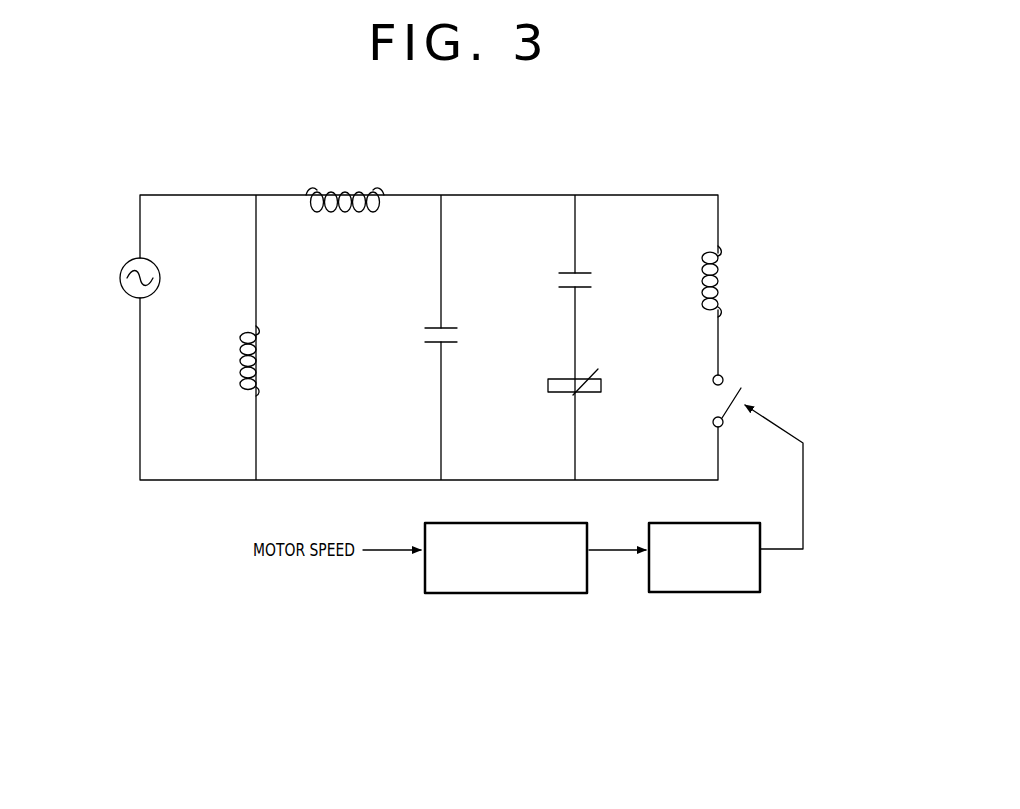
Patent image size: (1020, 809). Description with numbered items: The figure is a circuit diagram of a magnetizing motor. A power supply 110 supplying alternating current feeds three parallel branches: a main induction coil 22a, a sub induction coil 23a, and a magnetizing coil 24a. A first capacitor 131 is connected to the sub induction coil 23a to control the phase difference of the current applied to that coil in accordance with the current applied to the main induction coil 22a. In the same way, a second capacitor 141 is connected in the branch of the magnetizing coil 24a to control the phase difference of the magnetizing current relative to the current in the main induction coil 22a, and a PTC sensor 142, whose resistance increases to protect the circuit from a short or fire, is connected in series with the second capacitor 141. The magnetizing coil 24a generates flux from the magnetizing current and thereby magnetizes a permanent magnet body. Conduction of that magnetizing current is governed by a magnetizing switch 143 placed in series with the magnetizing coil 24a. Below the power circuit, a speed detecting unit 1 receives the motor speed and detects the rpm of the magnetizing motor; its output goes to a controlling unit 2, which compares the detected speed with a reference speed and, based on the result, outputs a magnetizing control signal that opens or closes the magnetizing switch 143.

The power supply 110 is at (118, 278).
The sub induction coil 23a is at (350, 190).
The main induction coil 22a is at (262, 365).
The first capacitor 131 is at (449, 327).
The second capacitor 141 is at (583, 271).
The thermistor / PTC resistor 142 is at (603, 384).
The magnetizing coil 24a is at (726, 283).
The magnetizing switch 143 is at (741, 388).
The speed detecting unit 1 is at (503, 596).
The controlling unit 2 is at (705, 594).